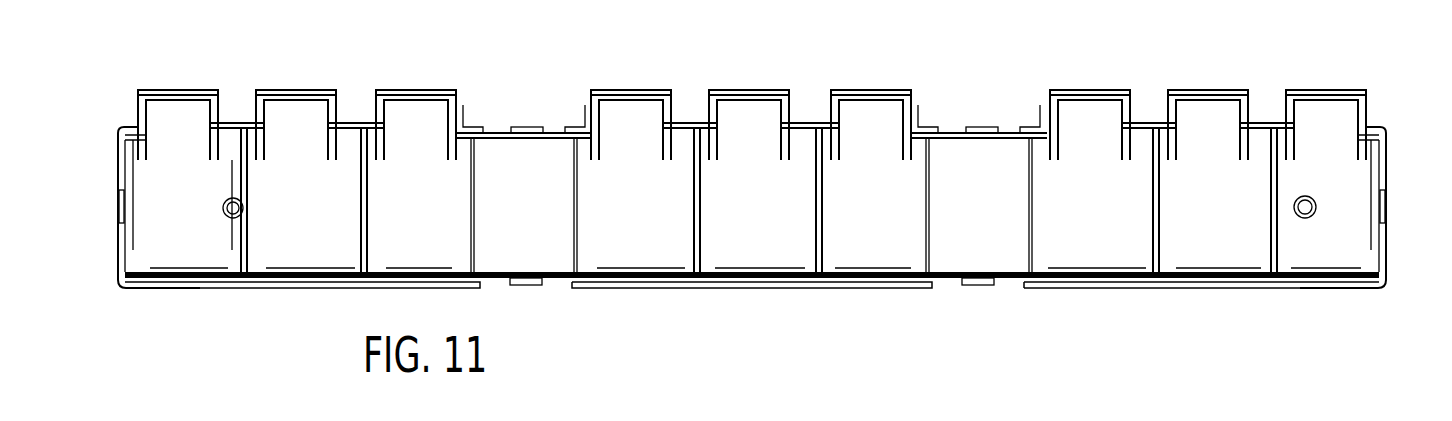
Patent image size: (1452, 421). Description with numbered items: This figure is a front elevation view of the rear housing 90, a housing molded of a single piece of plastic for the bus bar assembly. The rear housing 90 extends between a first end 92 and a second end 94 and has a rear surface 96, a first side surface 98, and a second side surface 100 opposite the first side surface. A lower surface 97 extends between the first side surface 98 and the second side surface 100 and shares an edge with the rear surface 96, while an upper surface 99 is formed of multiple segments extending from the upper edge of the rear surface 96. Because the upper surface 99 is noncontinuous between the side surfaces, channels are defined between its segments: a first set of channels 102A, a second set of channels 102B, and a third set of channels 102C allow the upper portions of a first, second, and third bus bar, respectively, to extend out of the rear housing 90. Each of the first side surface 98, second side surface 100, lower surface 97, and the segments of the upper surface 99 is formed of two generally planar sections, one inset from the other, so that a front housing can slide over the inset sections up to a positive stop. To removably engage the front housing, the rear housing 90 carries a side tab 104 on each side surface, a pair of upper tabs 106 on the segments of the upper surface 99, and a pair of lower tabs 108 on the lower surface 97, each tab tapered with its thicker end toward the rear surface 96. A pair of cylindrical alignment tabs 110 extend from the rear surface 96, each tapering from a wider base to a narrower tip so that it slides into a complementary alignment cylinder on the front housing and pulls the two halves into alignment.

The rear housing 90 is at (973, 42).
The first end 92 is at (115, 252).
The second end 94 is at (1388, 252).
The rear surface 96 is at (647, 216).
The lower surface 97 is at (325, 290).
The first side surface 98 is at (117, 150).
The upper surface 99 is at (495, 130).
The second side surface 100 is at (1388, 150).
The first set of channels 102A is at (636, 89).
The second set of channels 102B is at (752, 89).
The third set of channels 102C is at (871, 89).
The side tab 104 is at (115, 207).
The upper tab 106 is at (533, 127).
The lower tab 108 is at (527, 287).
The alignment tab 110 is at (223, 213).